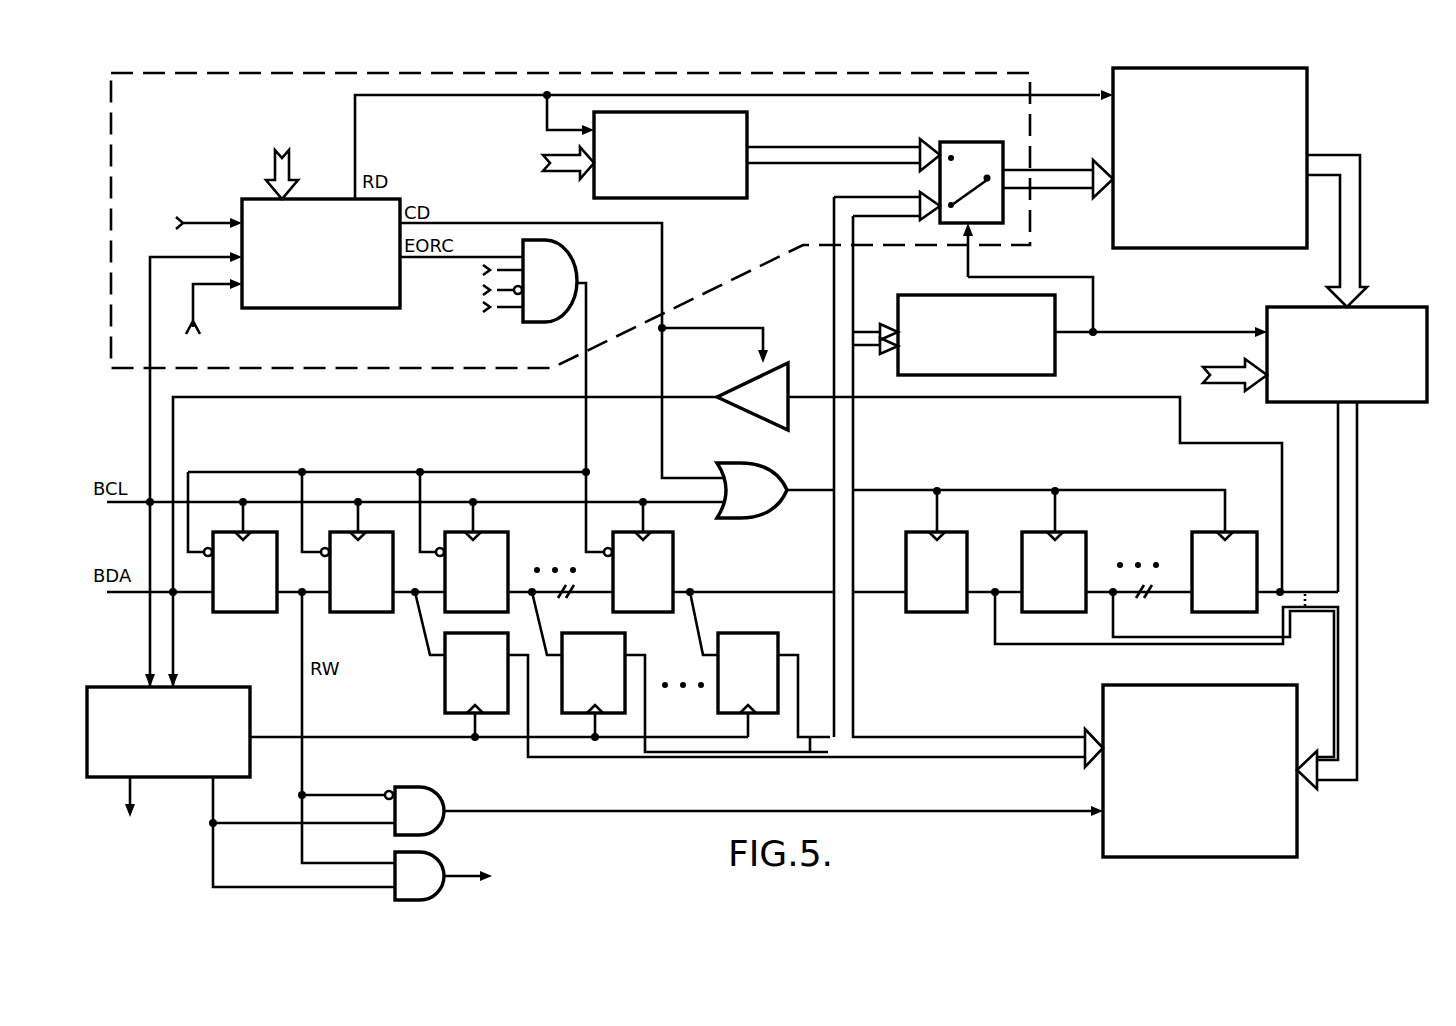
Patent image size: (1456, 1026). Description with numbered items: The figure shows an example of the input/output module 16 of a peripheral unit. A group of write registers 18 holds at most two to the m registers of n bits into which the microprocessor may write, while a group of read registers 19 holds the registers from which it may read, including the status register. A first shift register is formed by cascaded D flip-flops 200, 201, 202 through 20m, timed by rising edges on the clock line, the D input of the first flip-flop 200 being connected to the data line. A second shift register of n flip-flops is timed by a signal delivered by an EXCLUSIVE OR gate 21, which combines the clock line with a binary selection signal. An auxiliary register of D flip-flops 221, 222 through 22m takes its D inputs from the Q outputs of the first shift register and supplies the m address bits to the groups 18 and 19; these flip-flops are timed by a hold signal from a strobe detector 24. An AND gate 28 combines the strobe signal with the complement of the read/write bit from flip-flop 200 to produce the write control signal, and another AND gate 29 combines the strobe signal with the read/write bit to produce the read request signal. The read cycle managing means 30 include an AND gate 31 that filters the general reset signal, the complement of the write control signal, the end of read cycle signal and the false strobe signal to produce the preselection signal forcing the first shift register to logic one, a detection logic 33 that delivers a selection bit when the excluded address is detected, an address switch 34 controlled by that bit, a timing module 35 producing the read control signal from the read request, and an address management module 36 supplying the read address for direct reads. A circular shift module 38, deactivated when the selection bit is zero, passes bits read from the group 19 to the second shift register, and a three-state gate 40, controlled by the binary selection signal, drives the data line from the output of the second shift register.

The input/output module 16 is at (672, 830).
The group of write registers 18 is at (1100, 840).
The group of read registers 19 is at (1307, 100).
The first D flip-flop of the first shift register 200 is at (245, 613).
The D flip-flop of the first shift register 201 is at (375, 613).
The D flip-flop of the first shift register 202 is at (508, 557).
The last D flip-flop of the first shift register 20m is at (673, 562).
The EXCLUSIVE OR gate 21 is at (745, 470).
The D flip-flop of the auxiliary register 221 is at (445, 676).
The D flip-flop of the auxiliary register 222 is at (626, 649).
The last D flip-flop of the auxiliary register 22m is at (735, 633).
The strobe detector 24 is at (125, 686).
The AND gate 28 is at (427, 787).
The AND gate 29 is at (440, 898).
The read cycle managing means 30 is at (127, 371).
The AND gate 31 is at (543, 238).
The detection logic 33 is at (1000, 377).
The address switch 34 is at (968, 142).
The timing module 35 is at (357, 309).
The address management module 36 is at (748, 180).
The circular shift module 38 is at (1265, 312).
The three-state gate 40 is at (776, 365).